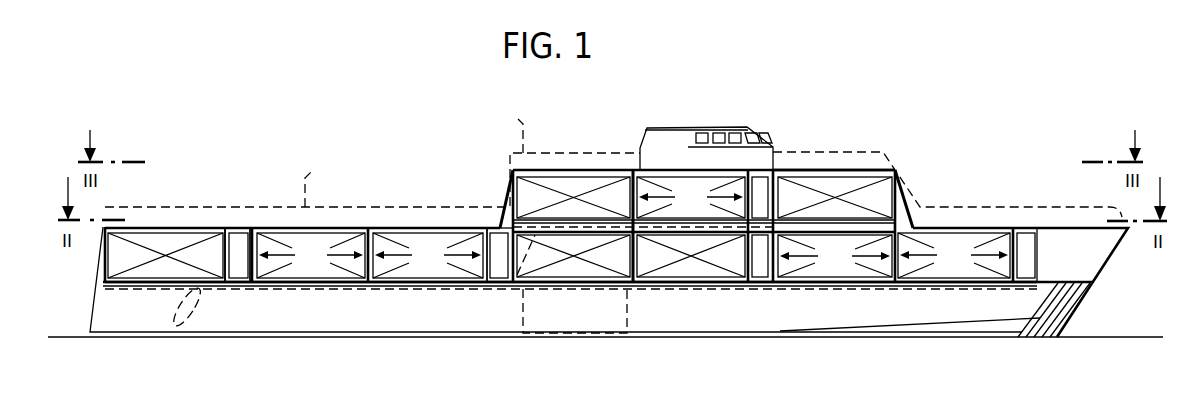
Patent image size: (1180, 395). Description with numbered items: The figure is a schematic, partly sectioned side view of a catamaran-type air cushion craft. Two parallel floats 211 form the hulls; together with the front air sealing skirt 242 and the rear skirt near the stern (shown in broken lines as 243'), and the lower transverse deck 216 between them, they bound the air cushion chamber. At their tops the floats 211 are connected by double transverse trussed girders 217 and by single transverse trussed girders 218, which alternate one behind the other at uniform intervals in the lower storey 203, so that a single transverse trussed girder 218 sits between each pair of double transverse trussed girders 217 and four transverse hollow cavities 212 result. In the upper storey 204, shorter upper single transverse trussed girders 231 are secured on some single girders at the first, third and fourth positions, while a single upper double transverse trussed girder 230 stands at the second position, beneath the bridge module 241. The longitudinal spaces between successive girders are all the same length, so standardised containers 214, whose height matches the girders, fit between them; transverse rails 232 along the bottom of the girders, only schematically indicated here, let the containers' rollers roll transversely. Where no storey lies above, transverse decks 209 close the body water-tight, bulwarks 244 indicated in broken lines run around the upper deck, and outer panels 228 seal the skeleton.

The lower storey 203 is at (150, 216).
The upper storey 204 is at (864, 162).
The transverse deck 209 is at (343, 227).
The float 211 is at (133, 318).
The transverse hollow cavity 212 is at (237, 272).
The container 214 is at (173, 240).
The lower transverse deck 216 is at (562, 285).
The double transverse trussed girder 217 is at (239, 218).
The single transverse trussed girder 218 is at (103, 277).
The panel 228 is at (503, 227).
The upper double transverse trussed girder 230 is at (757, 170).
The upper single transverse trussed girder 231 is at (508, 168).
The transverse rail 232 is at (107, 285).
The bridge module 241 is at (665, 142).
The front air sealing skirt 242 is at (1077, 303).
The propeller 243' is at (181, 329).
The bulwark 244 is at (613, 157).